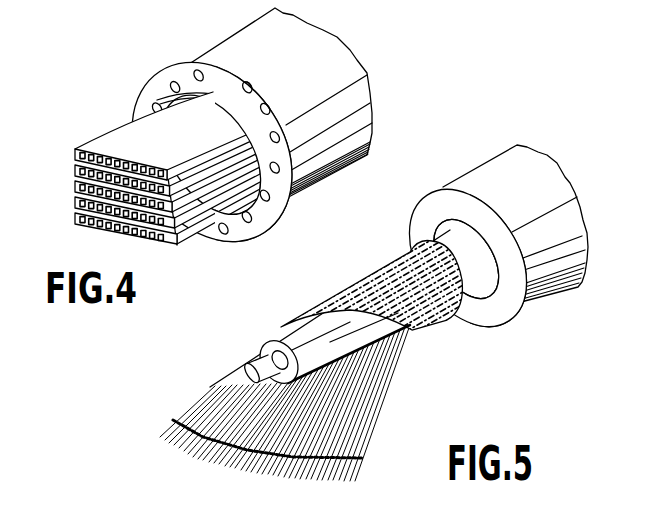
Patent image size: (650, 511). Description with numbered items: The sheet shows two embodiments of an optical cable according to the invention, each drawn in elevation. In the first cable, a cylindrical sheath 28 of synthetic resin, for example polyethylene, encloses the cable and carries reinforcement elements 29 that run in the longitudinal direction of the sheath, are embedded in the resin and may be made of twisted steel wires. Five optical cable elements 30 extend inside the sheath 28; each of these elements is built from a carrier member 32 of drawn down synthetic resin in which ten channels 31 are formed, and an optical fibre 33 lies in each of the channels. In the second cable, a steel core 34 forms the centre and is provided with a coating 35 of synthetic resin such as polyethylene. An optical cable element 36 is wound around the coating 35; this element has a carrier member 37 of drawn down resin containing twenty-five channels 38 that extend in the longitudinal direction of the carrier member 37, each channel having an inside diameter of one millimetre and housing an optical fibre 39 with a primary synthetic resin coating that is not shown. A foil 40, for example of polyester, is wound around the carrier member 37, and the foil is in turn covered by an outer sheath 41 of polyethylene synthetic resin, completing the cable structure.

In FIG. 4, the cylindrical sheath 28 is at (210, 151).
In FIG. 4, the reinforcement elements 29 is at (166, 86).
In FIG. 4, the optical cable elements 30 is at (145, 186).
In FIG. 4, the channels 31 is at (77, 149).
In FIG. 4, the carrier member 32 is at (186, 168).
In FIG. 4, the optical fibre 33 is at (181, 168).
In FIG. 5, the steel core 34 is at (254, 366).
In FIG. 5, the coating 35 is at (281, 340).
In FIG. 5, the optical cable element 36 is at (383, 291).
In FIG. 5, the carrier member 37 is at (385, 402).
In FIG. 5, the channels 38 is at (372, 458).
In FIG. 5, the optical fibre 39 is at (357, 478).
In FIG. 5, the foil 40 is at (448, 238).
In FIG. 5, the sheath 41 is at (456, 203).